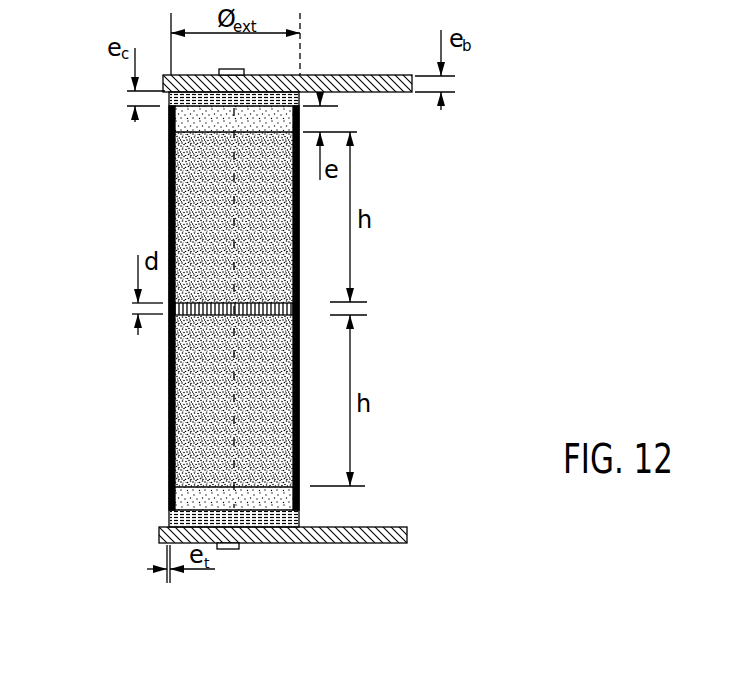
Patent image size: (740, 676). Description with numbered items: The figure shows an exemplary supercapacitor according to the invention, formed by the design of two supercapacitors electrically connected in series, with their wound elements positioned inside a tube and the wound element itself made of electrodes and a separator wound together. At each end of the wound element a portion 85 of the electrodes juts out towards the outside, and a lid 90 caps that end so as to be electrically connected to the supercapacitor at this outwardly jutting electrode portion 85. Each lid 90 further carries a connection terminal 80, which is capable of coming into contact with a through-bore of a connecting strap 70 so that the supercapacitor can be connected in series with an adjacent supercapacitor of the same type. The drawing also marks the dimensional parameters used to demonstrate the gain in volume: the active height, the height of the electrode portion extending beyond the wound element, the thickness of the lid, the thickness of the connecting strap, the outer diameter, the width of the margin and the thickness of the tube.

The connecting strap 70 is at (392, 93).
The connection terminal 80 is at (247, 72).
The electrode portion 85 is at (283, 492).
The lid 90 is at (192, 106).